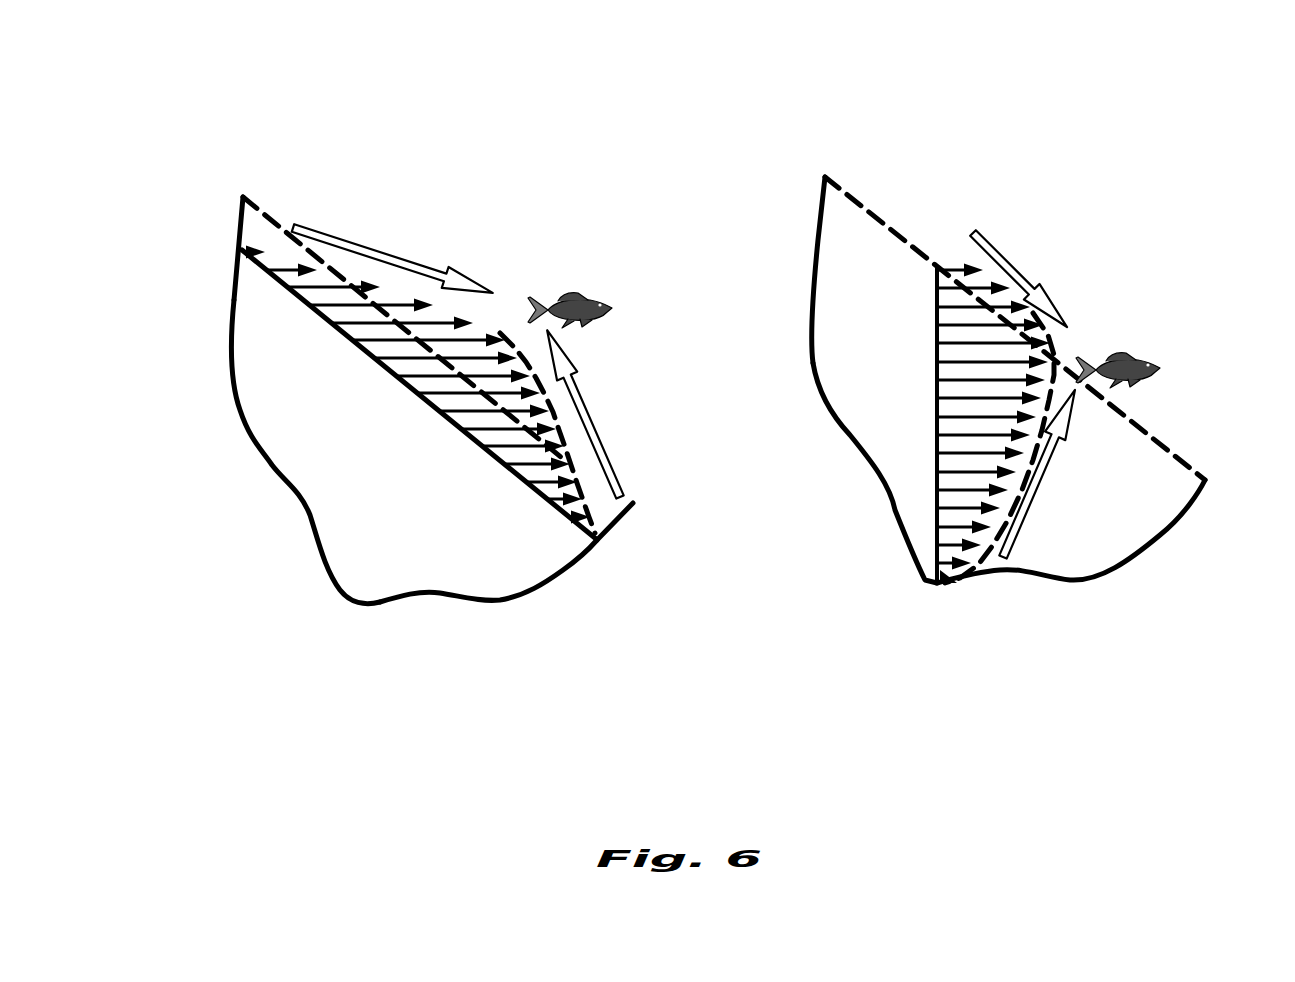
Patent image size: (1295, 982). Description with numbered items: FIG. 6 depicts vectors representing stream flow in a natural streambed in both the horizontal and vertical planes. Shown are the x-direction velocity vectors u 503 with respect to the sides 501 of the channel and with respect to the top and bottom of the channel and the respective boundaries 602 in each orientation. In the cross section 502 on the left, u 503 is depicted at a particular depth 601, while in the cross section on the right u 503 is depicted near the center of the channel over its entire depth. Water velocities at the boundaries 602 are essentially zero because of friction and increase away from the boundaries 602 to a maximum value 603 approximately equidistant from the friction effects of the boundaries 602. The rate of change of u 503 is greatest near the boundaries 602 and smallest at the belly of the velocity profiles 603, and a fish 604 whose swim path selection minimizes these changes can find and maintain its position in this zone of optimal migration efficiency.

The sides of the channel 501 is at (240, 213).
The cross section 502 is at (495, 575).
The x-direction velocity vector u 503 is at (392, 337).
The particular depth 601 is at (490, 457).
The boundaries 602 is at (603, 533).
The velocity profile maximum value 603 is at (497, 332).
The fish 604 is at (613, 311).